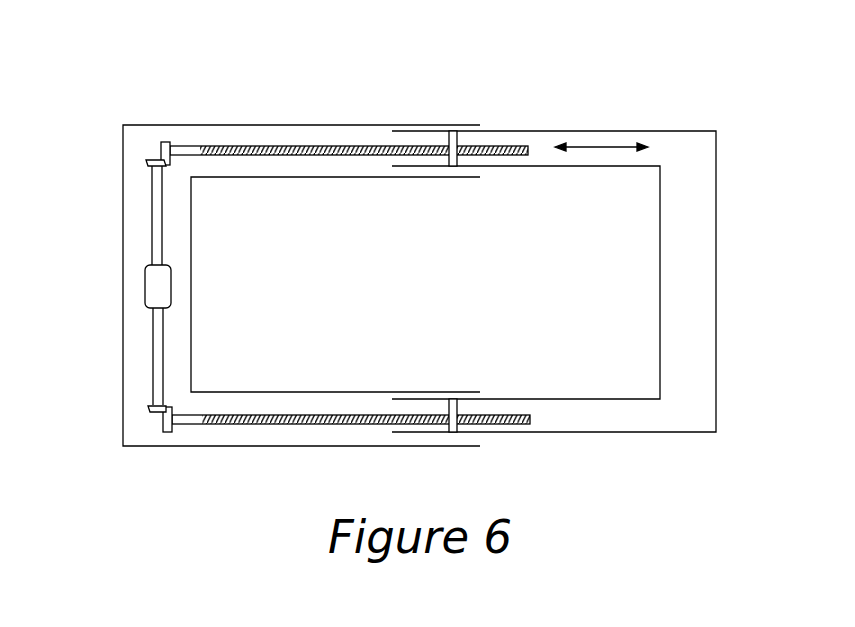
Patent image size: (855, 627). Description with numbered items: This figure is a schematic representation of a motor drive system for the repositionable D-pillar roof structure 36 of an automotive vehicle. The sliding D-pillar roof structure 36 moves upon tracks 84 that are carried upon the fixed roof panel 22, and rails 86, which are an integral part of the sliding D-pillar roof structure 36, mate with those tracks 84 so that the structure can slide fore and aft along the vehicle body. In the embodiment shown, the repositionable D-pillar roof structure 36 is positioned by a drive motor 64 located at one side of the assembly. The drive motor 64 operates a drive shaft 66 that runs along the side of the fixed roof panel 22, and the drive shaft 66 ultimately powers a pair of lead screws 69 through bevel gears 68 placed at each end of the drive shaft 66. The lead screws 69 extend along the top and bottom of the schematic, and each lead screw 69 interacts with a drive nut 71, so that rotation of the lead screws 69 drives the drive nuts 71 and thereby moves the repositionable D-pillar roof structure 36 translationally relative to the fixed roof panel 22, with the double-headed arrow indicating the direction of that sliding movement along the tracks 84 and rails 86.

The fixed roof panel 22 is at (236, 125).
The repositionable D-pillar roof structure 36 is at (716, 130).
The drive motor 64 is at (148, 290).
The drive shaft 66 is at (152, 362).
The bevel gears 68 is at (166, 143).
The lead screws 69 is at (311, 146).
The drive nuts 71 is at (448, 133).
The tracks 84 is at (288, 178).
The rails 86 is at (580, 166).